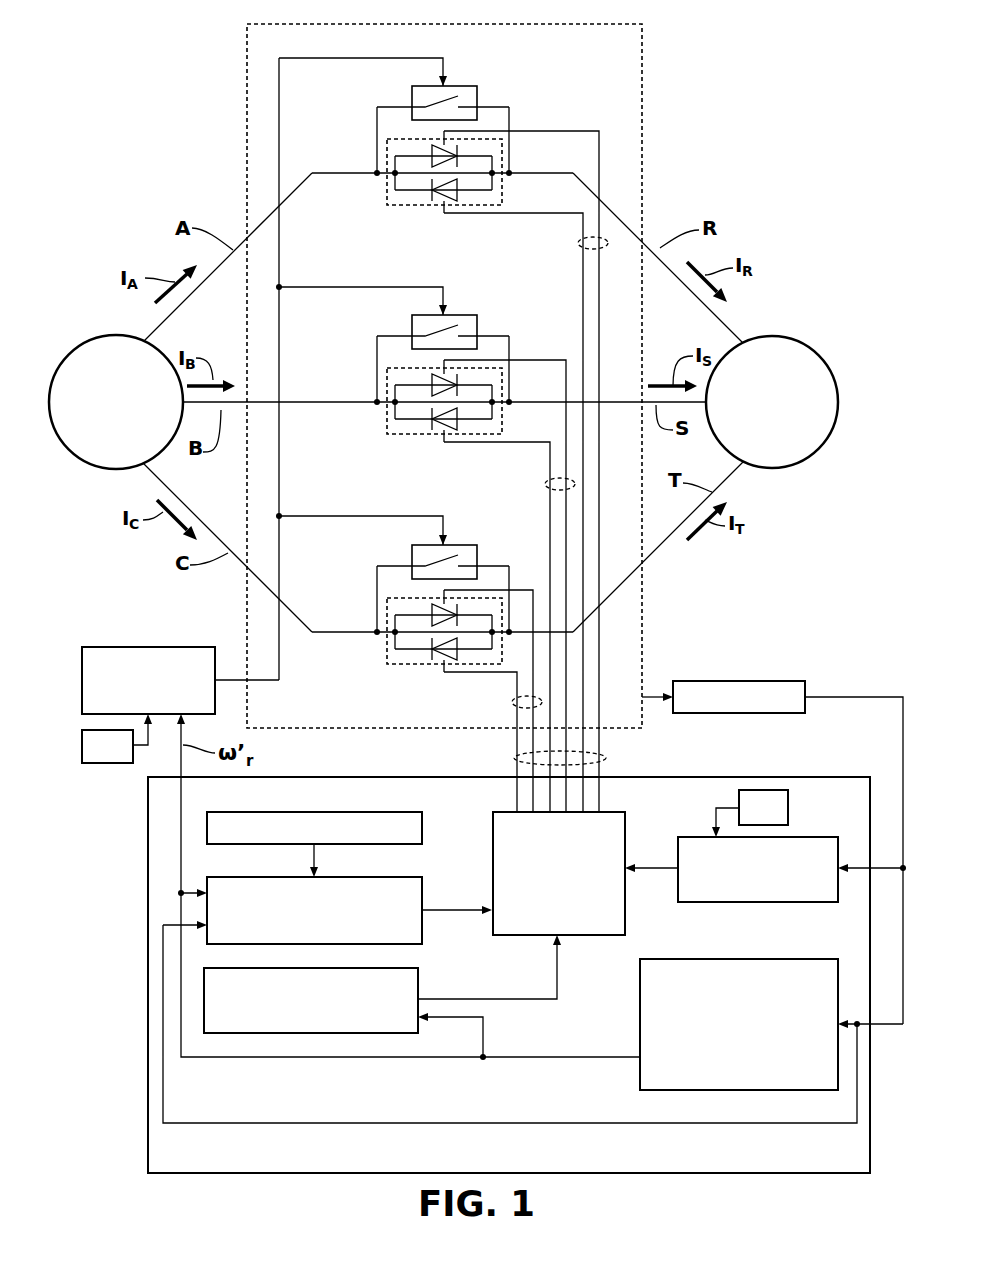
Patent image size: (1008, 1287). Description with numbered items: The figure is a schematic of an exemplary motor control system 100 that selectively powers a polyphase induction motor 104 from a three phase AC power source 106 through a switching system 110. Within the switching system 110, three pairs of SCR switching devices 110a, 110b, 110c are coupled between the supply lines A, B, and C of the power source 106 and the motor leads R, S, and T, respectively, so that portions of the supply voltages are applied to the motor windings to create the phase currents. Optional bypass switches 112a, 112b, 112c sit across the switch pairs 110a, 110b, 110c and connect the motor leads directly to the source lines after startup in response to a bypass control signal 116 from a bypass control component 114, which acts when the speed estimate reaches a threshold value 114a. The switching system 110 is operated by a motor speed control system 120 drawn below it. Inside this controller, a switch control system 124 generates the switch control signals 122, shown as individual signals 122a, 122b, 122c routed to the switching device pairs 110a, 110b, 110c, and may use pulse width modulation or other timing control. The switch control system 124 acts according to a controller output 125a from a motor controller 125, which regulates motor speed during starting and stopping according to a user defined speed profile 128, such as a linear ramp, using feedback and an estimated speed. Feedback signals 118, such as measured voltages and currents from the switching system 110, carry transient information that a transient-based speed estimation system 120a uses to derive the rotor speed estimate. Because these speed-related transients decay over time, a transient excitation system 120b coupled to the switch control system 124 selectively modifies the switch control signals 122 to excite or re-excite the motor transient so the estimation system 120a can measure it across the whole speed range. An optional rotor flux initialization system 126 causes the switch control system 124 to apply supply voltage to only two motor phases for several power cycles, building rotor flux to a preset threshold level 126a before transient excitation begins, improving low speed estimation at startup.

The motor control system 100 is at (126, 36).
The polyphase induction motor 104 is at (805, 343).
The three phase AC power source 106 is at (88, 343).
The switching system 110 is at (247, 42).
The SCR switching device pair 110a is at (387, 196).
The SCR switching device pair 110b is at (387, 425).
The SCR switching device pair 110c is at (387, 655).
The bypass switch 112a is at (412, 92).
The bypass switch 112b is at (412, 321).
The bypass switch 112c is at (412, 549).
The bypass control component 114 is at (82, 681).
The threshold value 114a is at (82, 748).
The bypass control signal 116 is at (240, 679).
The feedback signals 118 is at (722, 715).
The motor speed control system 120 is at (148, 1090).
The transient-based speed estimation system 120a is at (639, 993).
The transient excitation system 120b is at (204, 999).
The switch control signals 122 is at (515, 758).
The switch control signal 122a is at (578, 243).
The switch control signal 122b is at (545, 484).
The switch control signal 122c is at (512, 703).
The switch control system 124 is at (625, 826).
The motor controller 125 is at (288, 877).
The controller output 125a is at (470, 908).
The rotor flux initialization system 126 is at (755, 903).
The preset level TH1 126a is at (790, 806).
The speed profile 128 is at (285, 812).